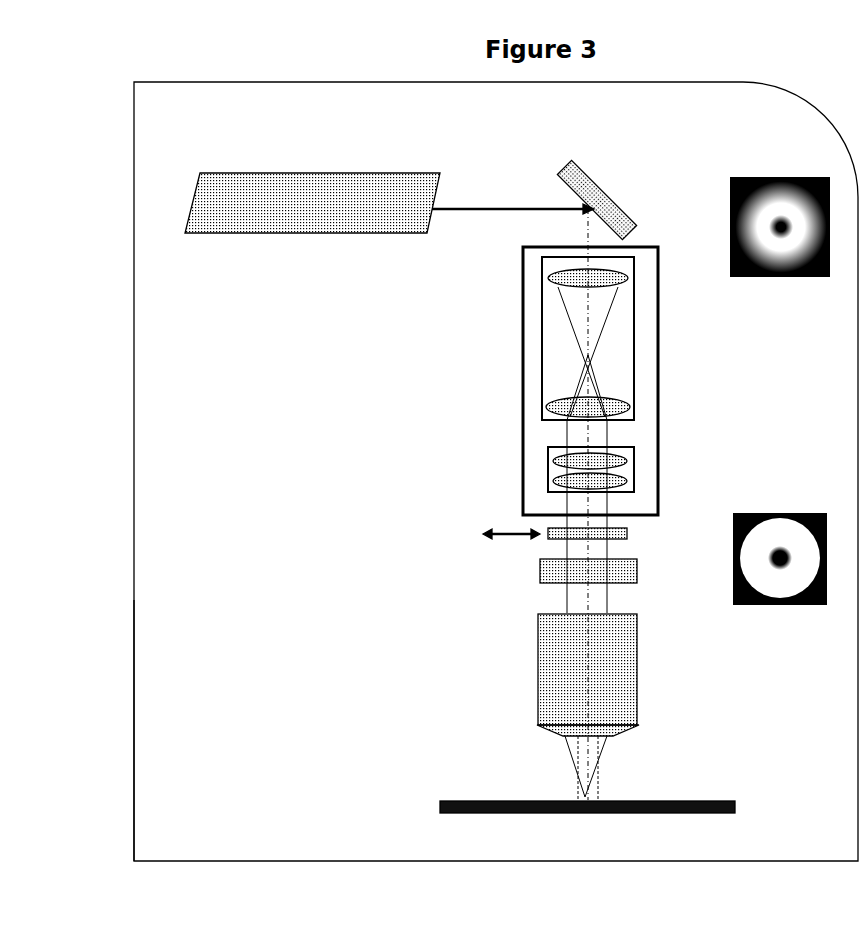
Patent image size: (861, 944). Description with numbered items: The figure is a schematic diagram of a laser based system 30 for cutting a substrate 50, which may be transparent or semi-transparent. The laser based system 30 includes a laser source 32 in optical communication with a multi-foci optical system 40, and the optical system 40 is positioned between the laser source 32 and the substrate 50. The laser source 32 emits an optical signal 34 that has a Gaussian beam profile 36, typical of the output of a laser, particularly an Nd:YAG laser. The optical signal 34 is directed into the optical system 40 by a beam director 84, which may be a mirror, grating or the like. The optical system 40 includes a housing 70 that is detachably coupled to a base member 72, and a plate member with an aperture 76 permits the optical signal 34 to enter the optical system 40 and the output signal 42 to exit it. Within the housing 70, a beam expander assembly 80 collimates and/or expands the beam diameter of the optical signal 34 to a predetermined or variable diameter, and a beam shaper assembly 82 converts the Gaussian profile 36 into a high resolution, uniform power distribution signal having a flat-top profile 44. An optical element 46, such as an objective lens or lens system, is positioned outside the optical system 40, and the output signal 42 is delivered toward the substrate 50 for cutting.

The laser based system 30 is at (118, 174).
The laser source 32 is at (324, 172).
The optical signal 34 is at (513, 198).
The Gaussian beam profile 36 is at (748, 176).
The multi-foci optical system 40 is at (660, 384).
The output signal 42 is at (588, 600).
The flat-top profile 44 is at (773, 512).
The optical element 46 is at (630, 533).
The substrate 50 is at (463, 800).
The housing 70 is at (522, 392).
The base member 72 is at (133, 661).
The aperture 76 is at (481, 535).
The beam expander assembly 80 is at (542, 315).
The beam shaper assembly 82 is at (636, 452).
The beam director 84 is at (584, 163).